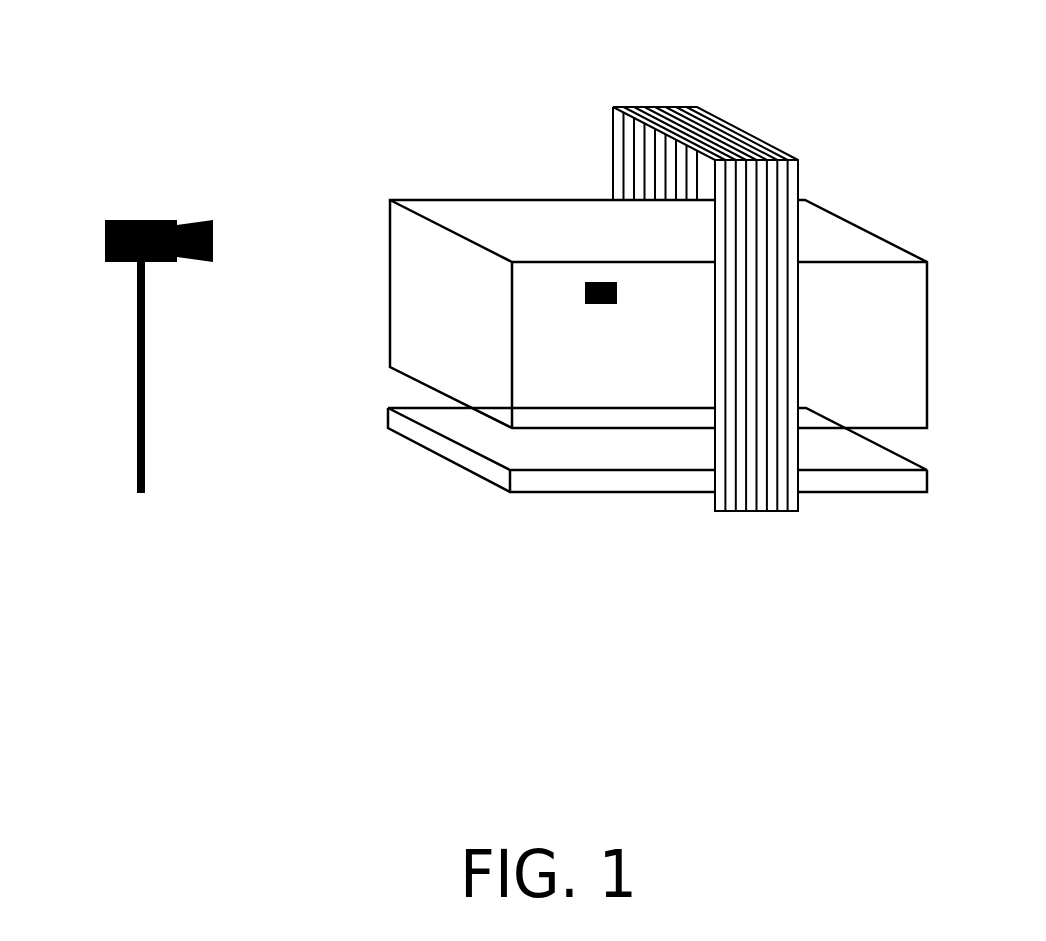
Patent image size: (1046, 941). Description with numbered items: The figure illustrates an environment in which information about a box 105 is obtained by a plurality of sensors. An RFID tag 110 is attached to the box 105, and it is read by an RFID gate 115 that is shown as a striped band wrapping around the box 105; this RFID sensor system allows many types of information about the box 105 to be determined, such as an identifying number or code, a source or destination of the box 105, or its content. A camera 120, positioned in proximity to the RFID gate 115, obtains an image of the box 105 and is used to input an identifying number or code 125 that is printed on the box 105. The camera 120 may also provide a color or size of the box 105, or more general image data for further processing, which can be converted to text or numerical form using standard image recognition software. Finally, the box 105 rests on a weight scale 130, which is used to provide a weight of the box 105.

The box 105 is at (905, 240).
The RFID tag 110 is at (623, 315).
The RFID gate 115 is at (644, 87).
The camera 120 is at (127, 188).
The identifying number or code 125 is at (432, 273).
The weight scale 130 is at (468, 483).